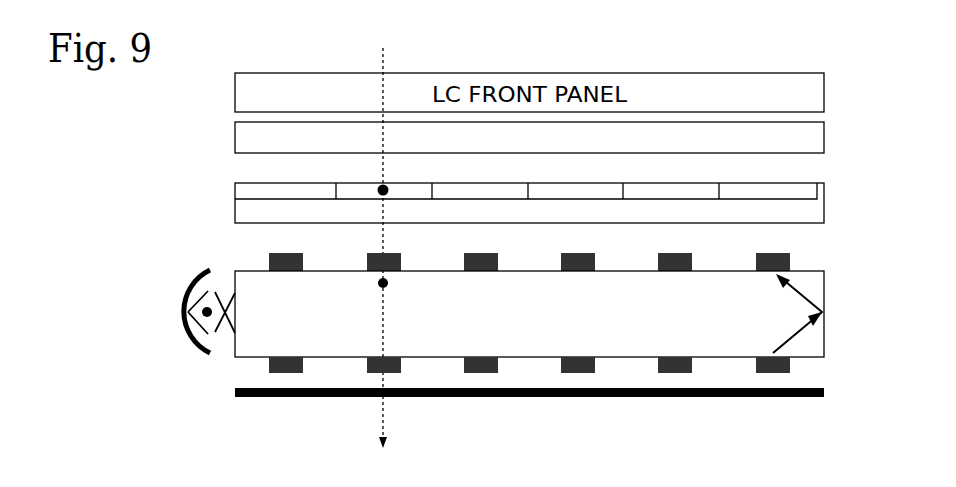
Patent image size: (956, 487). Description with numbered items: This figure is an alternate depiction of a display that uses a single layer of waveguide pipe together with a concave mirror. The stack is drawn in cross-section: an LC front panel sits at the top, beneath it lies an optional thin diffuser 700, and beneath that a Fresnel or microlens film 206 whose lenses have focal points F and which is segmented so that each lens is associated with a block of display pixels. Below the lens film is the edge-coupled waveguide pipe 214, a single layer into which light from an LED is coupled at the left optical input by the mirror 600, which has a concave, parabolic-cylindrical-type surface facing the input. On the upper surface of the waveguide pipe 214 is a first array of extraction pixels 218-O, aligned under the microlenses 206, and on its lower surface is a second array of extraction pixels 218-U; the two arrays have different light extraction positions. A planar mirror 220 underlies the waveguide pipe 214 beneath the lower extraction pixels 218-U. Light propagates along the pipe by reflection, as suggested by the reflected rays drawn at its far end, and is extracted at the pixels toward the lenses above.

The thin diffuser 700 is at (447, 146).
The microlens 206 is at (457, 189).
The first array of extraction pixels 218-O is at (263, 258).
The waveguide pipe 214 is at (477, 321).
The mirror 600 is at (191, 339).
The second array of extraction pixels 218-U is at (268, 364).
The planar mirror 220 is at (652, 398).